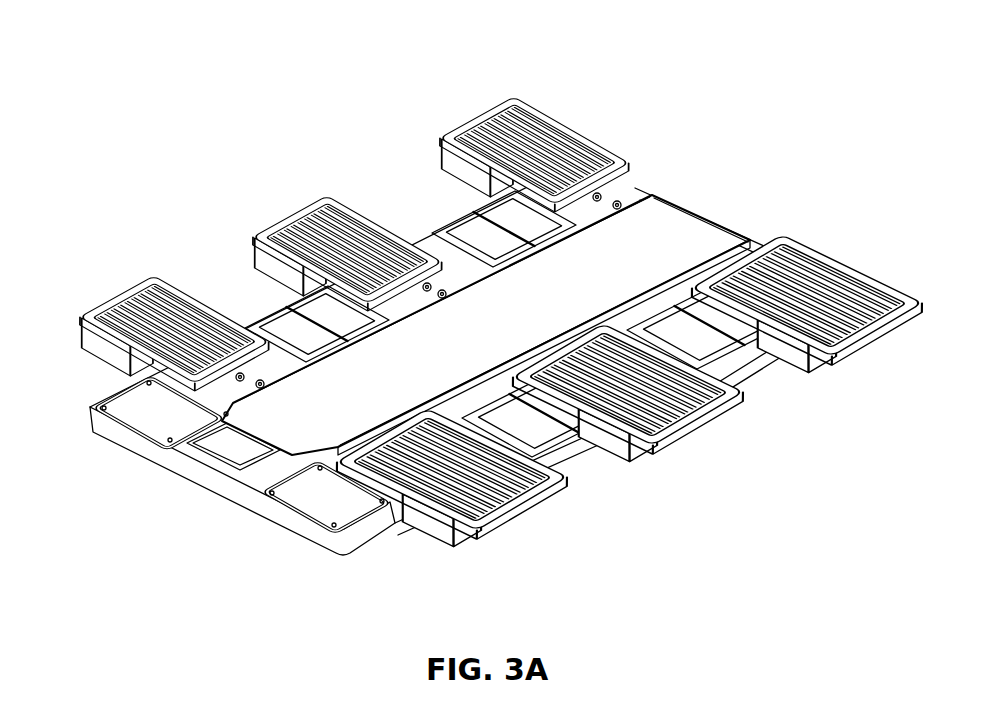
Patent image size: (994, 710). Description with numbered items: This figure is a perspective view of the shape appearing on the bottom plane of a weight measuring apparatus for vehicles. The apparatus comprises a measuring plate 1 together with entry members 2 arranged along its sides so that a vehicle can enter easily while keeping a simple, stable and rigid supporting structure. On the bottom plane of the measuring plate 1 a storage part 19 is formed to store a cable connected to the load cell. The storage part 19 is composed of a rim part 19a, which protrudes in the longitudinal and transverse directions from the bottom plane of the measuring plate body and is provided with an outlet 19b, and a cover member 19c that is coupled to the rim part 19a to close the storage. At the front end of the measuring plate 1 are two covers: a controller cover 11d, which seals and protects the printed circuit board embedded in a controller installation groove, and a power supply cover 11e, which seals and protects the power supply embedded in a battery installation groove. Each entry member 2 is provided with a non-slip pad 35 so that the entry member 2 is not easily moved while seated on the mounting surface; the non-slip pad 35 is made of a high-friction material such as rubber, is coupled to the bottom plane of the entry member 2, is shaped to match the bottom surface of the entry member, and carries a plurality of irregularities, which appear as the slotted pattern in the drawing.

The measuring plate 1 is at (454, 340).
The entry member 2 is at (491, 302).
The controller cover 11d is at (160, 424).
The power supply cover 11e is at (312, 503).
The storage part 19 is at (521, 254).
The rim part 19a is at (684, 287).
The outlet 19b is at (737, 182).
The cover member 19c is at (650, 218).
The non-slip pad 35 is at (712, 412).